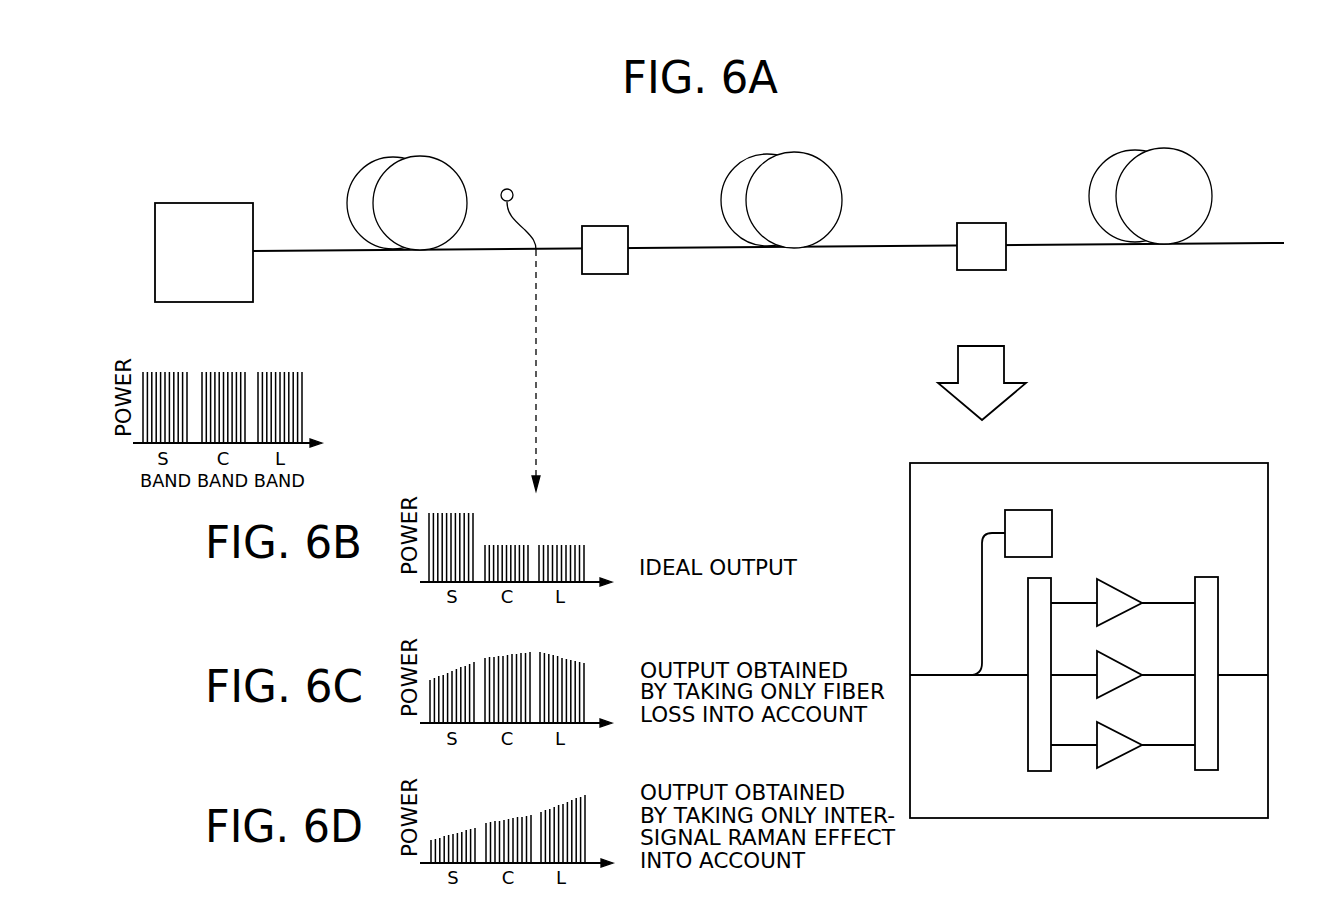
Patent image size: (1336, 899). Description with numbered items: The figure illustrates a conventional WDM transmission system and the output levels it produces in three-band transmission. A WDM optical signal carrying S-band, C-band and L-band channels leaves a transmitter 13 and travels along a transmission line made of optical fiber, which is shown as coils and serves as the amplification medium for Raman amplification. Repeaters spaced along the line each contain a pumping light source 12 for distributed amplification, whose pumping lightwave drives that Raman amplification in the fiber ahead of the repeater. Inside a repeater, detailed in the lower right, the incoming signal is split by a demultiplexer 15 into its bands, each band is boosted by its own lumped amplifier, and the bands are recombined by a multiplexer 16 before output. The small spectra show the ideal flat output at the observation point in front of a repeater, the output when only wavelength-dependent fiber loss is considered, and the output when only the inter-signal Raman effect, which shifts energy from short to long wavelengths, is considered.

The pumping light source for distributed amplification 12 is at (1052, 531).
The transmitter 13 is at (207, 203).
The demultiplexer 15 is at (1028, 737).
The multiplexer 16 is at (1218, 708).